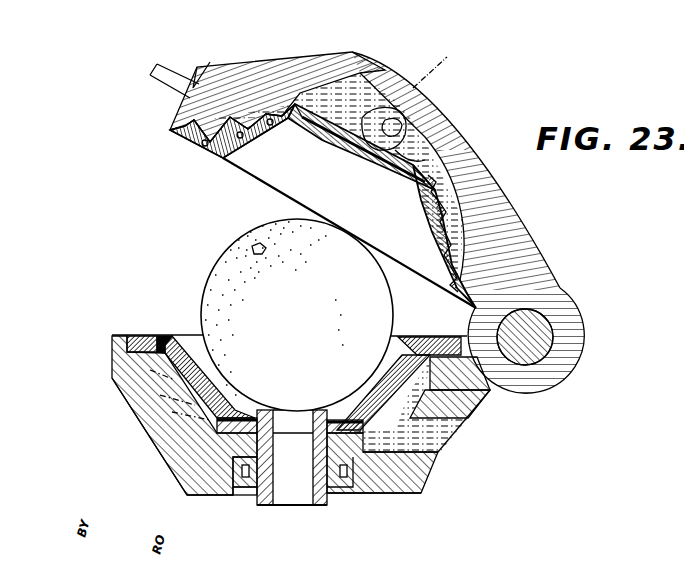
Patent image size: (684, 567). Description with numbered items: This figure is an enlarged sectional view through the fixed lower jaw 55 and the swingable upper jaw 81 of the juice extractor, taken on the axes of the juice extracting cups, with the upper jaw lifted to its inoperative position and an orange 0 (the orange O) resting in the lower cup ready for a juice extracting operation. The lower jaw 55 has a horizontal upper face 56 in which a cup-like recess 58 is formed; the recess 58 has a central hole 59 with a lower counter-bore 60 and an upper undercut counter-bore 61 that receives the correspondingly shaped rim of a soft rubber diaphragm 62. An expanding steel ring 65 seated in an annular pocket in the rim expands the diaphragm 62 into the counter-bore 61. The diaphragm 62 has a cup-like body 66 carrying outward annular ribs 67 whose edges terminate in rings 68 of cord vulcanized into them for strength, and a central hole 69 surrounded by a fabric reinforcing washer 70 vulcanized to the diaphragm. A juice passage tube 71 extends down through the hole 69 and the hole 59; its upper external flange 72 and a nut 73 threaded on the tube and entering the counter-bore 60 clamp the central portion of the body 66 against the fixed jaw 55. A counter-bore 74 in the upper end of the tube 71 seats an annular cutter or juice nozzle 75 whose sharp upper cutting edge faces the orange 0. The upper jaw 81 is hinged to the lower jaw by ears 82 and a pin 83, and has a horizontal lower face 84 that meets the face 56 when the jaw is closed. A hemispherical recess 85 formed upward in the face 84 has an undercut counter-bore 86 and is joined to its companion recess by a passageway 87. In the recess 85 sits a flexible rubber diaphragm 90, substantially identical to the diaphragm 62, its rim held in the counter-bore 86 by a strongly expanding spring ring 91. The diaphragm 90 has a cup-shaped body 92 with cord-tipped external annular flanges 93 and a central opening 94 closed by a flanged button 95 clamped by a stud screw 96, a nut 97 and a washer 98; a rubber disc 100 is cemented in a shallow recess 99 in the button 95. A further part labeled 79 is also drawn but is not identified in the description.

The orange 0 is at (220, 262).
The lower jaw 55 is at (123, 393).
The horizontal upper face 56 is at (112, 335).
The cup-like recess 58 is at (177, 403).
The central hole 59 is at (330, 504).
The lower counter-bore 60 is at (352, 490).
The upper undercut counter-bore 61 is at (138, 336).
The soft rubber diaphragm 62 is at (163, 352).
The expanding steel ring 65 is at (152, 352).
The cup-like body 66 is at (395, 338).
The annular ribs 67 is at (477, 395).
The rings of cord 68 is at (445, 434).
The hole 69 is at (262, 416).
The fabric reinforcing washer 70 is at (187, 467).
The juice passage tube 71 is at (262, 506).
The external flange 72 is at (375, 391).
The nut 73 is at (240, 487).
The counter-bore 74 is at (316, 432).
The annular cutter or juice nozzle 75 is at (282, 416).
The lower right body block 79 is at (440, 448).
The upper swingable jaw 81 is at (505, 218).
The hinge ears 82 is at (557, 377).
The pin 83 is at (555, 333).
The horizontal lower face 84 is at (172, 131).
The hemispherical recess 85 is at (447, 157).
The undercut counter-bore 86 is at (192, 147).
The passageway 87 is at (439, 70).
The flexible rubber diaphragm 90 is at (218, 160).
The expanding spring ring 91 is at (200, 152).
The cup-shaped body 92 is at (264, 143).
The cord-tipped external annular flanges 93 is at (250, 118).
The central opening 94 is at (378, 90).
The flanged button 95 is at (320, 135).
The stud screw 96 is at (392, 110).
The nut 97 is at (412, 140).
The washer 98 is at (440, 153).
The shallow recess 99 is at (405, 165).
The rubber disc 100 is at (370, 163).